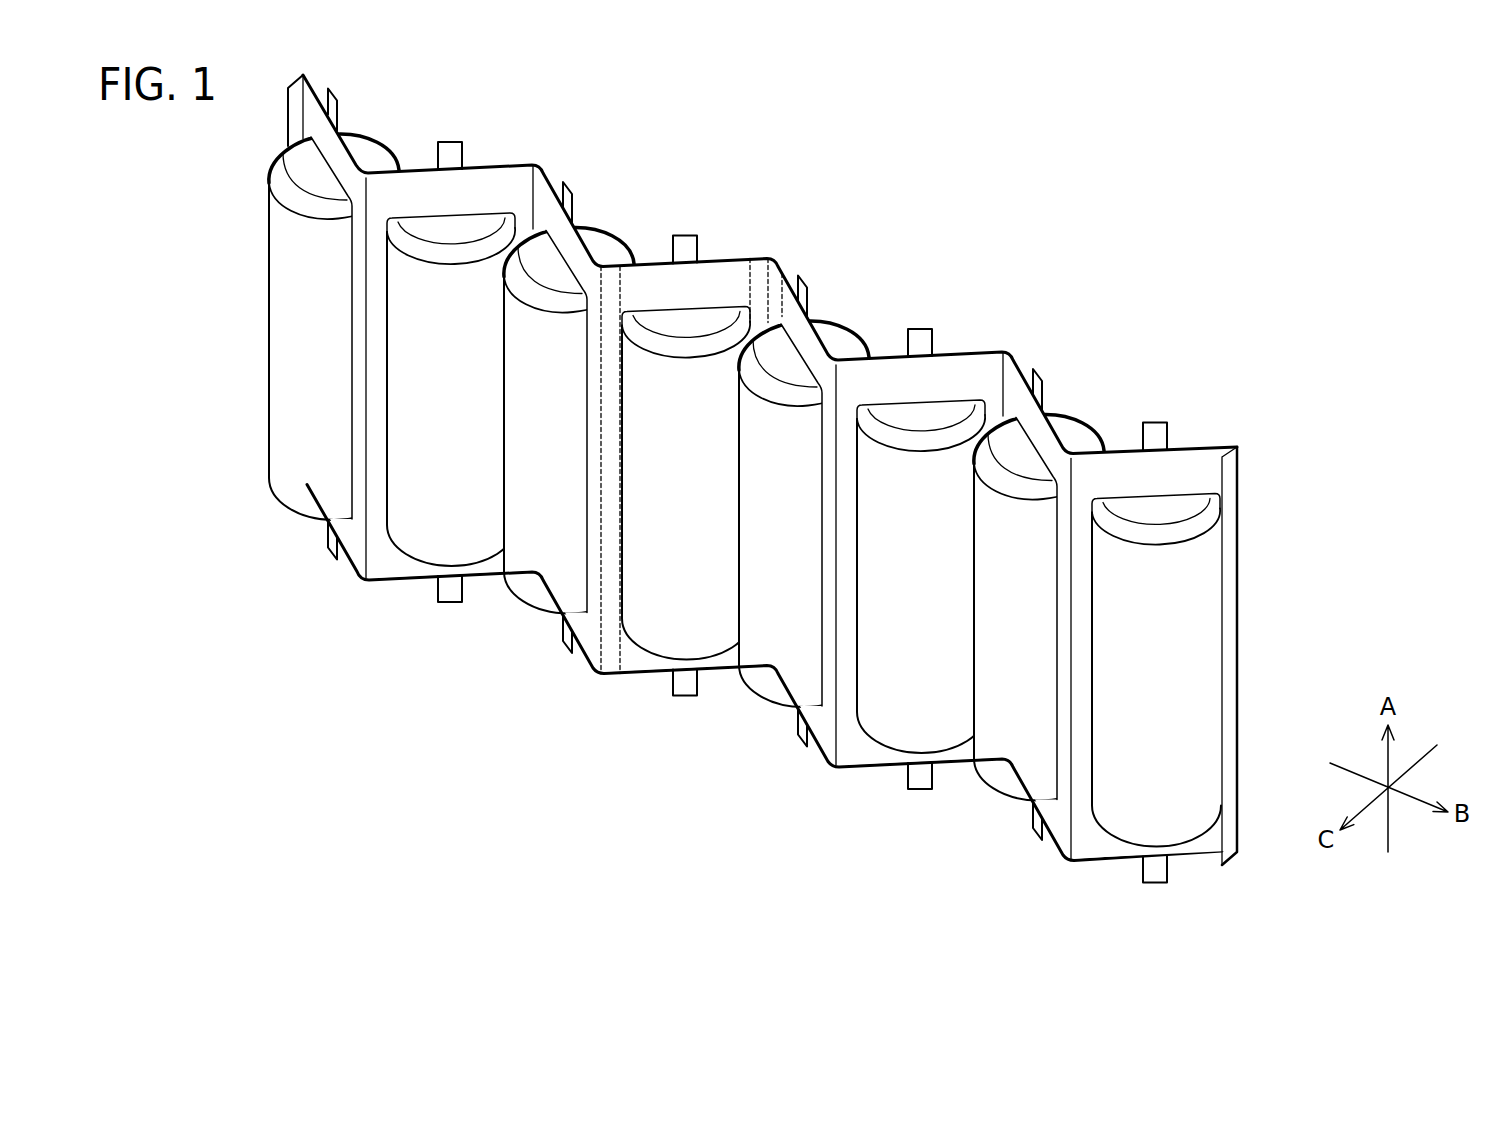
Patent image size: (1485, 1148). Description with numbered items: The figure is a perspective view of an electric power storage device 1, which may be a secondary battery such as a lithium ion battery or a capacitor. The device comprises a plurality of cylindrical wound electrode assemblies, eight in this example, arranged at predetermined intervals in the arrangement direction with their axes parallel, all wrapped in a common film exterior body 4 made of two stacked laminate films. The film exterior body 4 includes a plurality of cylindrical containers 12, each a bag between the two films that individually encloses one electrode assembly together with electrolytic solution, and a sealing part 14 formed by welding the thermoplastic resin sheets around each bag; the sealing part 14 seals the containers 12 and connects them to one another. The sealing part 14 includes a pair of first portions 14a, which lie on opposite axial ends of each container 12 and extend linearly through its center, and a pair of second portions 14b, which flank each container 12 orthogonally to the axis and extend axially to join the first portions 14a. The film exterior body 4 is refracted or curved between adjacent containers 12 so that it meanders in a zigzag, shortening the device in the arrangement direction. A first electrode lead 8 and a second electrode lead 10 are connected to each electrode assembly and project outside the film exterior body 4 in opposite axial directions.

The electric power storage device 1 is at (753, 509).
The film exterior body 4 is at (975, 668).
The first electrode lead 8 is at (1149, 438).
The second electrode lead 10 is at (1141, 870).
The container 12 is at (1020, 641).
The sealing part 14 is at (883, 767).
The first portion 14a is at (703, 290).
The second portion 14b is at (757, 266).